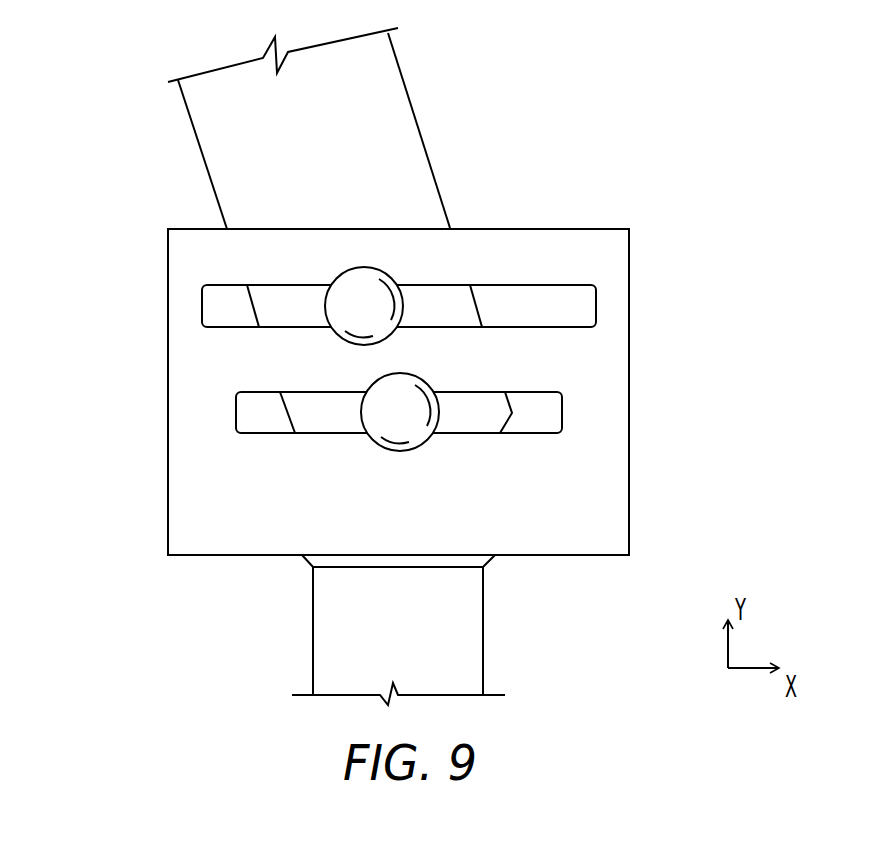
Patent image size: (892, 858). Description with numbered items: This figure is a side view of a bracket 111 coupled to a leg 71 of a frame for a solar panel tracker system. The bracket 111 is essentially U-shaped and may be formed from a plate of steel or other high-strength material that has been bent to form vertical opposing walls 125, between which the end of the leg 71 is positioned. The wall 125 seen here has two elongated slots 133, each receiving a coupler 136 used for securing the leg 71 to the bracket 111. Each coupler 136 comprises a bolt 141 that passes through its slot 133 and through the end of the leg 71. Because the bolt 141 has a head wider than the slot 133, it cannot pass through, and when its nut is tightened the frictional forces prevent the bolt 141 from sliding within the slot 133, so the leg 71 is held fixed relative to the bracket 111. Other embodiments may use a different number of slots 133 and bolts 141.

The leg 71 is at (390, 120).
The bracket 111 is at (413, 443).
The vertical opposing wall 125 is at (629, 229).
The elongated slot 133 is at (584, 308).
The coupler 136 is at (334, 255).
The bolt 141 is at (337, 333).